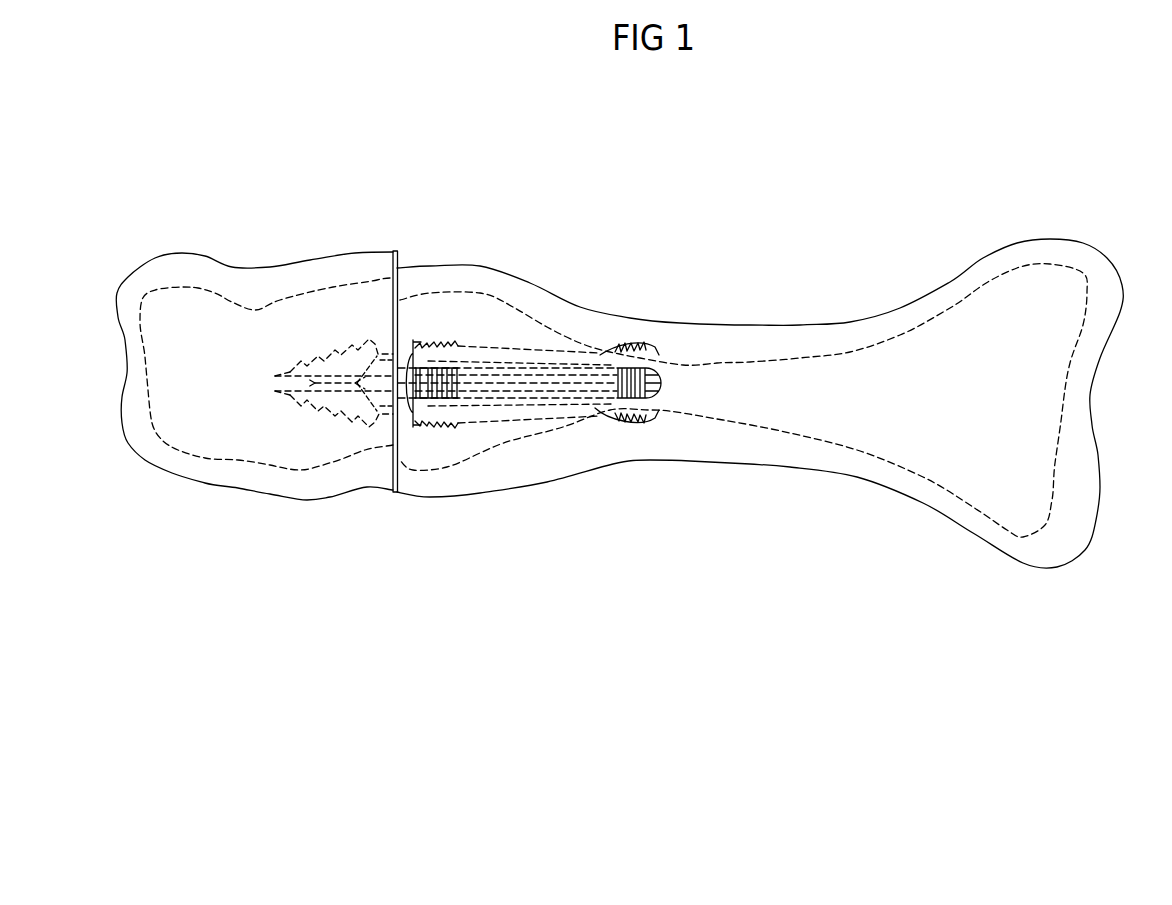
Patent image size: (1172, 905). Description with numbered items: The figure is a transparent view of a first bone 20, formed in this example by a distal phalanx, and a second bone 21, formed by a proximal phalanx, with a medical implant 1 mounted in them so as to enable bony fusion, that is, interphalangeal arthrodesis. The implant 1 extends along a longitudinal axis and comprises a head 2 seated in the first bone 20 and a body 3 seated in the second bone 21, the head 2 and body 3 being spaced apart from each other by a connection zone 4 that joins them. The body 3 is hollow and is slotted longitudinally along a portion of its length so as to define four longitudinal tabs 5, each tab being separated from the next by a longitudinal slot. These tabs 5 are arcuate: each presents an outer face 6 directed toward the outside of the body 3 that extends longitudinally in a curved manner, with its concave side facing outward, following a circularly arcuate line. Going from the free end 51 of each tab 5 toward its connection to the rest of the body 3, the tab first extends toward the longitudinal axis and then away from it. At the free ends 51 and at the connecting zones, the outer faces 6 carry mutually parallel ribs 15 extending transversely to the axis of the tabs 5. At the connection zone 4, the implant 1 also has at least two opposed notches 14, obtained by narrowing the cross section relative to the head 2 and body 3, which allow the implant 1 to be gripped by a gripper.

The medical implant 1 is at (487, 335).
The head 2 is at (320, 406).
The body 3 is at (413, 343).
The connection zone 4 is at (394, 338).
The longitudinal tabs 5 is at (553, 367).
The outer face 6 is at (498, 352).
The notches 14 is at (390, 408).
The ribs 15 is at (632, 423).
The first bone 20 is at (231, 267).
The second bone 21 is at (822, 323).
The free end 51 is at (653, 348).